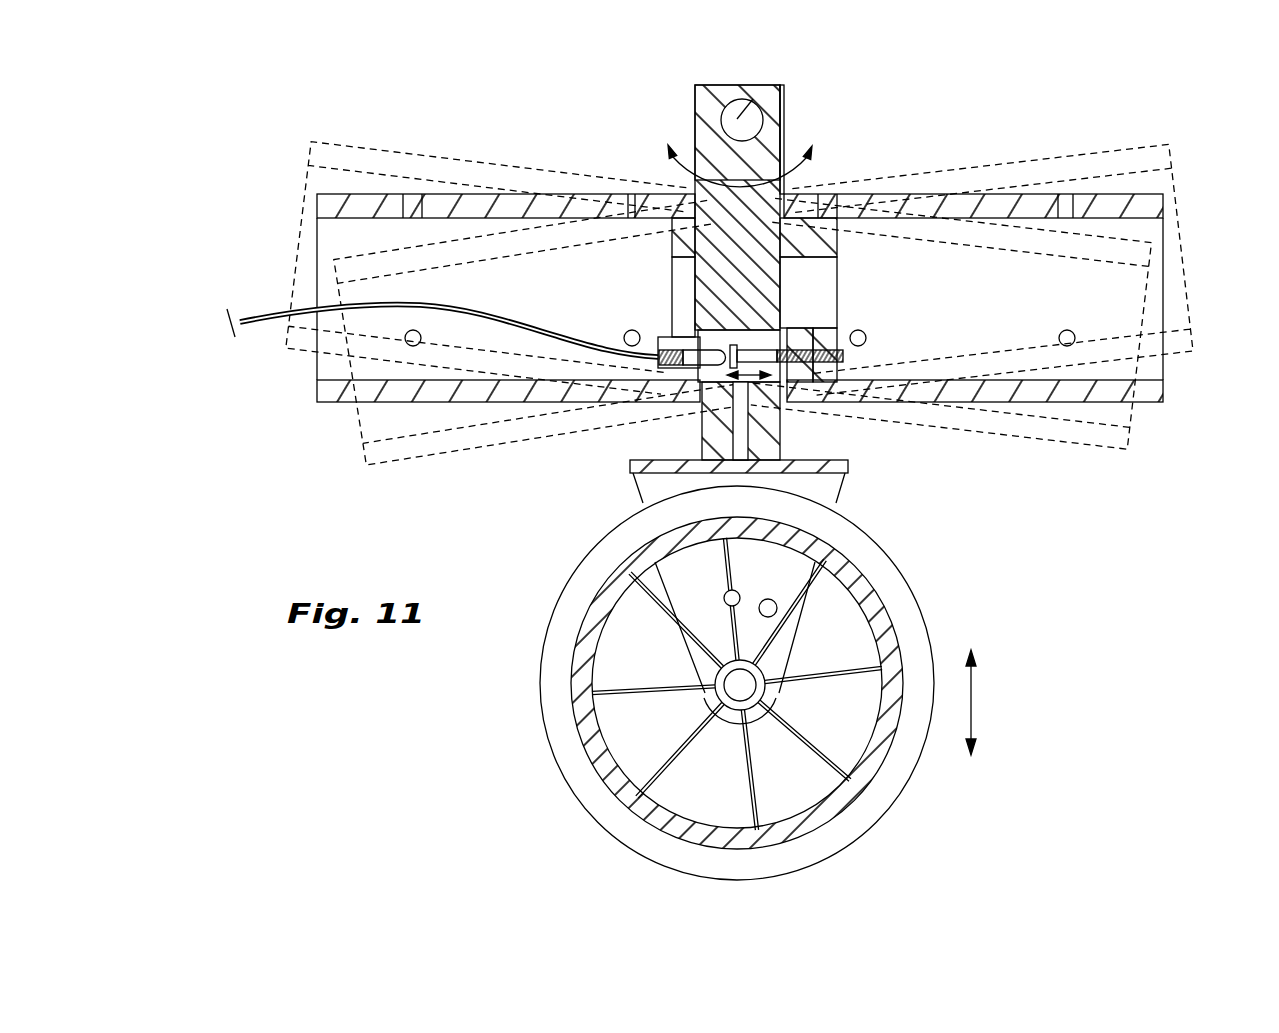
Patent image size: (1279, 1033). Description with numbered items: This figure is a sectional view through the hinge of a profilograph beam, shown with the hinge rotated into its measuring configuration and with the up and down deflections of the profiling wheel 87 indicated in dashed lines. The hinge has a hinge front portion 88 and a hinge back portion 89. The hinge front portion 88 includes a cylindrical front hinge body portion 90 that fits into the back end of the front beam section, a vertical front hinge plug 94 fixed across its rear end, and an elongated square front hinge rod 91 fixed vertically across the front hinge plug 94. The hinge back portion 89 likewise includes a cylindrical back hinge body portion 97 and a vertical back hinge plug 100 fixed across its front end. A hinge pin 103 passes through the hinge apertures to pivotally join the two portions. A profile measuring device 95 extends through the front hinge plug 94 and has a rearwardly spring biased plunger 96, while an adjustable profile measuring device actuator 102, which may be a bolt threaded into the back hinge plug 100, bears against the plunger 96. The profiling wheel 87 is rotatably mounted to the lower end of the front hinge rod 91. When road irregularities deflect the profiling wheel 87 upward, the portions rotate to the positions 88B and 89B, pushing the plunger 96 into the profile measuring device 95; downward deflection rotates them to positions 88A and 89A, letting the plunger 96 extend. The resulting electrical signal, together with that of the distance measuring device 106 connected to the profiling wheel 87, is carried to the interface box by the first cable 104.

The profiling wheel 87 is at (791, 668).
The hinge front portion 88 is at (508, 242).
The hinge front portion (downward deflection position) 88A is at (303, 183).
The hinge front portion (upward deflection position) 88B is at (360, 418).
The hinge back portion 89 is at (981, 243).
The hinge back portion (downward deflection position) 89A is at (1167, 157).
The hinge back portion (upward deflection position) 89B is at (1132, 425).
The front hinge body portion 90 is at (557, 194).
The front hinge rod 91 is at (756, 188).
The front hinge plug 94 is at (694, 255).
The profile measuring device 95 is at (685, 372).
The plunger 96 is at (698, 356).
The back hinge body portion 97 is at (943, 194).
The back hinge plug 100 is at (820, 227).
The profile measuring device actuator 102 is at (768, 357).
The hinge pin 103 is at (740, 117).
The first cable 104 is at (517, 328).
The distance measuring device 106 is at (777, 608).